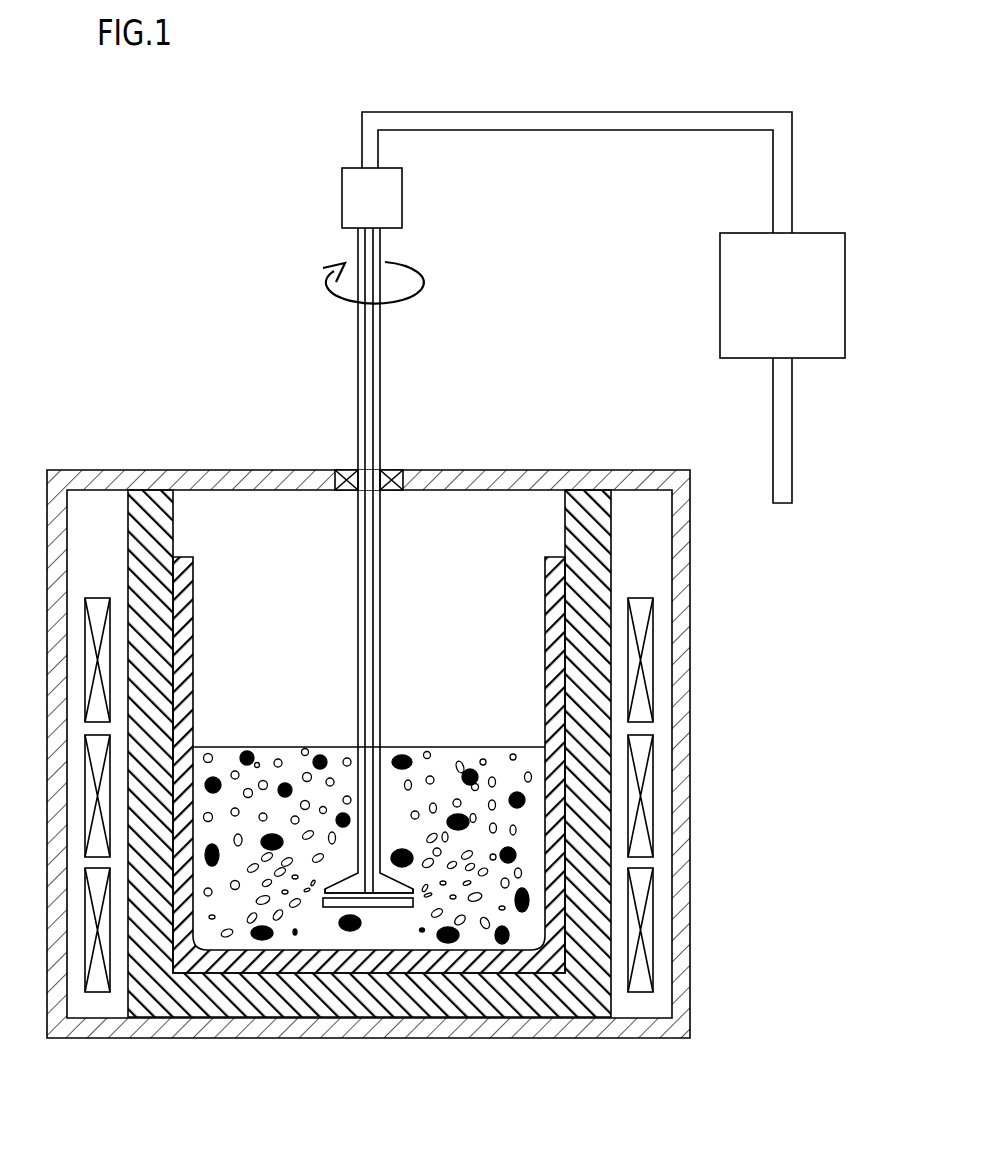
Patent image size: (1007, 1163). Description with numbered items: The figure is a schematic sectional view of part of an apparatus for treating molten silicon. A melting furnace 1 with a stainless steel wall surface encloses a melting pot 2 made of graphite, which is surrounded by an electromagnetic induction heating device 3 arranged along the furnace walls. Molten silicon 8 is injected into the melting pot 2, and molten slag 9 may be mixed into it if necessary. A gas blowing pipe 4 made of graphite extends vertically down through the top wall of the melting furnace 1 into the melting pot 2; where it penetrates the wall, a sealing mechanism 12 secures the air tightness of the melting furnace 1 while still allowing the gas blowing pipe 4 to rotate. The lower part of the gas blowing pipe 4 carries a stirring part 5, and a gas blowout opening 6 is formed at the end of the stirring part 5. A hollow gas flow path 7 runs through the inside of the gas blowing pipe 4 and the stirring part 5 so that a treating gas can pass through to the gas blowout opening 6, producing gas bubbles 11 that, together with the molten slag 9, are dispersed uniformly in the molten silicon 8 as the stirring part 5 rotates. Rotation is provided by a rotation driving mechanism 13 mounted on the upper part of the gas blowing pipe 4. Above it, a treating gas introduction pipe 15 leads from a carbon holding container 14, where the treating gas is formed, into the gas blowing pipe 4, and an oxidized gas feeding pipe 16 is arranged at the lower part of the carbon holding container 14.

The melting furnace 1 is at (490, 470).
The melting pot 2 is at (200, 577).
The electromagnetic induction heating device 3 is at (97, 818).
The gas blowing pipe 4 is at (381, 355).
The stirring part 5 is at (385, 907).
The gas blowout opening 6 is at (321, 898).
The hollow gas flow path 7 is at (373, 408).
The molten silicon 8 is at (235, 940).
The molten slag 9 is at (447, 943).
The gas bubbles 11 is at (485, 930).
The sealing mechanism 12 is at (392, 470).
The rotation driving mechanism 13 is at (342, 198).
The carbon holding container 14 is at (846, 297).
The treating gas introduction pipe 15 is at (580, 112).
The oxidized gas feeding pipe 16 is at (793, 420).